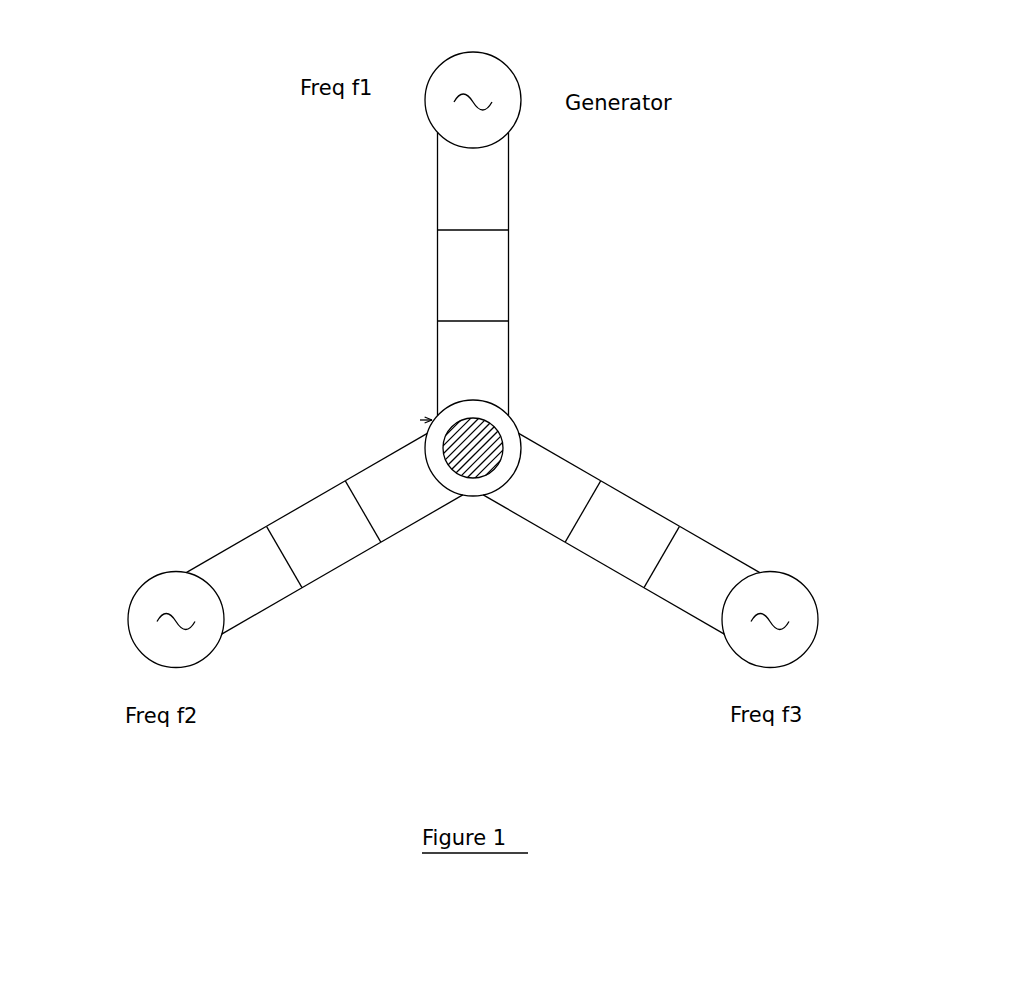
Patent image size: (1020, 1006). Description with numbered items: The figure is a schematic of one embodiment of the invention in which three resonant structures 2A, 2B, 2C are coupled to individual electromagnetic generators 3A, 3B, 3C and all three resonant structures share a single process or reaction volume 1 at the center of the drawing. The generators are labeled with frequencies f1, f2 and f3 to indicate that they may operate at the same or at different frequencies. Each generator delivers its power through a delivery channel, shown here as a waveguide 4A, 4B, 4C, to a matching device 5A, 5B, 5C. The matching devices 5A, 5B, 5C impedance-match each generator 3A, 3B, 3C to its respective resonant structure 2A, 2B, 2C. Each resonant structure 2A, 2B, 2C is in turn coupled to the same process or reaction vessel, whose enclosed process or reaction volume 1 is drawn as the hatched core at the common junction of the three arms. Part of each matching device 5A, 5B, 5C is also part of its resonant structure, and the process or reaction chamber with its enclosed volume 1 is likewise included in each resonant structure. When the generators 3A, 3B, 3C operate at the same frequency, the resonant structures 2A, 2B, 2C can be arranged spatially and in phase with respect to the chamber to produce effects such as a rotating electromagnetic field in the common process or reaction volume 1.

The process or reaction volume 1 is at (472, 429).
The resonant structure 2A is at (494, 373).
The resonant structure 2B is at (398, 462).
The resonant structure 2C is at (533, 485).
The electromagnetic generator 3A is at (498, 60).
The electromagnetic generator 3B is at (145, 585).
The electromagnetic generator 3C is at (792, 573).
The waveguide 4A is at (450, 187).
The waveguide 4B is at (238, 555).
The waveguide 4C is at (707, 558).
The matching device 5A is at (450, 285).
The matching device 5B is at (320, 510).
The matching device 5C is at (632, 512).